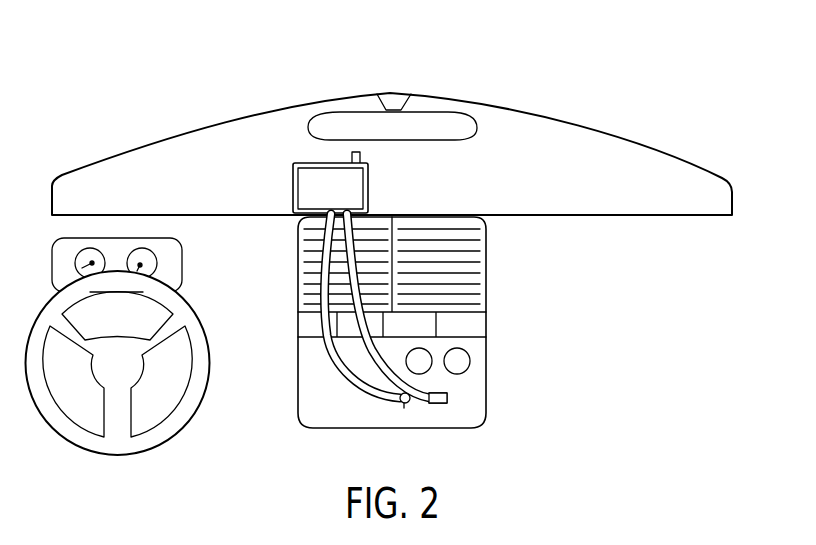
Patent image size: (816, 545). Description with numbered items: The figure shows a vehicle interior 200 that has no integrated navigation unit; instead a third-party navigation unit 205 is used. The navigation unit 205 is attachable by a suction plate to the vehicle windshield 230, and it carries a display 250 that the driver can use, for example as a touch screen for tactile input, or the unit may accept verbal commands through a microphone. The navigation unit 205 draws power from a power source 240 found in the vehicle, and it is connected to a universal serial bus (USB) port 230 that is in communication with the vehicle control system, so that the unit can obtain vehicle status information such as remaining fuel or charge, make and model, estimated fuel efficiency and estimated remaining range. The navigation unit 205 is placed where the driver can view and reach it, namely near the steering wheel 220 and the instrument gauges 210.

The vehicle interior 200 is at (679, 102).
The navigation unit 205 is at (369, 192).
The instrument gauges 210 is at (183, 260).
The steering wheel 220 is at (207, 332).
The vehicle windshield / universal serial bus (USB) port 230 is at (543, 125).
The power source 240 is at (405, 404).
The display 250 is at (312, 191).